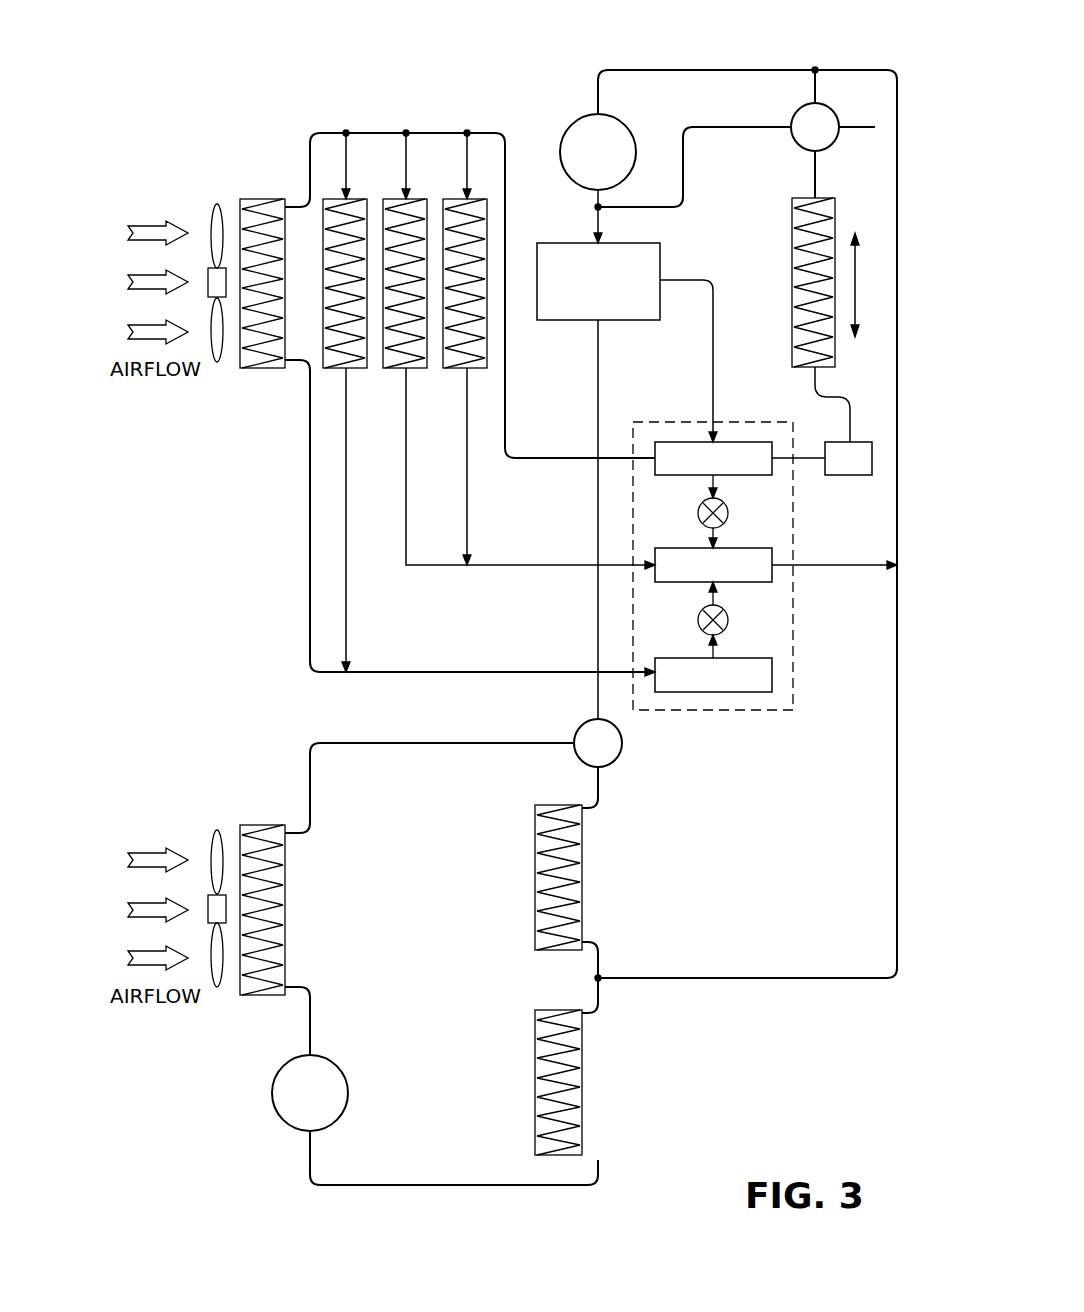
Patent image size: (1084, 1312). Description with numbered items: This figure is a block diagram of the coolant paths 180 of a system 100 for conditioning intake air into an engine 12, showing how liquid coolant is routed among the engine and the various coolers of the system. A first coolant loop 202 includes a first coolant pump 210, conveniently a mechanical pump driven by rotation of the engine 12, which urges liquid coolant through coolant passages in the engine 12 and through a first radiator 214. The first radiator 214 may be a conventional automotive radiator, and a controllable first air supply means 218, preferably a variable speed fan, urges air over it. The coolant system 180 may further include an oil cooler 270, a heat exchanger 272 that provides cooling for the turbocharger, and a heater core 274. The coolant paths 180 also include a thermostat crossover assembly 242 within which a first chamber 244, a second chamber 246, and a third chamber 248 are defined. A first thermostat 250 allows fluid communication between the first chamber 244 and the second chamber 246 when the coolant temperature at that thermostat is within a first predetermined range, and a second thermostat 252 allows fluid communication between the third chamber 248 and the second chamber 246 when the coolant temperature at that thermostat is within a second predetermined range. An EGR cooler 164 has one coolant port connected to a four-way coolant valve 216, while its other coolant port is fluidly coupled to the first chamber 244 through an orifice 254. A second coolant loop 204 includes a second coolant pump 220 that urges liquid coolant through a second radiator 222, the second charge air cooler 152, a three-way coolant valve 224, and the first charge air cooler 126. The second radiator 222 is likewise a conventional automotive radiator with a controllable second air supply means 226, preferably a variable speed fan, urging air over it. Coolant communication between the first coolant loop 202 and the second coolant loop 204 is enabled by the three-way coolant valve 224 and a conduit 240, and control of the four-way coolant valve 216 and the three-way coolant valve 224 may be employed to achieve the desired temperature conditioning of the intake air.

The system for conditioning intake air 100 is at (305, 57).
The coolant paths 180 is at (262, 95).
The engine 12 is at (555, 243).
The first charge air cooler 126 is at (582, 1130).
The second charge air cooler 152 is at (535, 810).
The EGR cooler 164 is at (792, 235).
The first coolant loop 202 is at (670, 70).
The second coolant loop 204 is at (370, 1185).
The first coolant pump 210 is at (578, 115).
The first radiator 214 is at (245, 197).
The four-way coolant valve 216 is at (800, 107).
The first air supply means 218 is at (213, 212).
The second coolant pump 220 is at (280, 1118).
The second radiator 222 is at (245, 825).
The three-way coolant valve 224 is at (615, 760).
The second air supply means 226 is at (212, 838).
The conduit 240 is at (745, 978).
The thermostat crossover assembly 242 is at (755, 710).
The first chamber 244 is at (748, 442).
The second chamber 246 is at (760, 548).
The third chamber 248 is at (760, 658).
The first thermostat 250 is at (728, 513).
The second thermostat 252 is at (728, 620).
The orifice 254 is at (862, 442).
The oil cooler 270 is at (357, 199).
The heat exchanger 272 is at (417, 199).
The heater core 274 is at (477, 199).